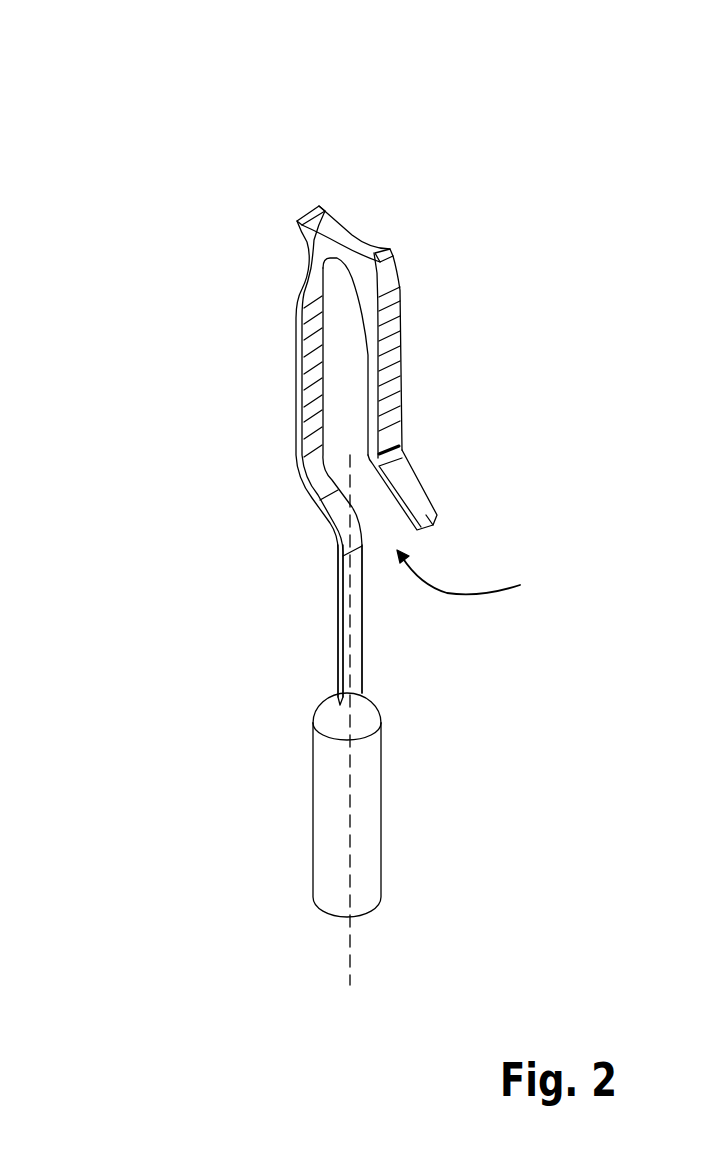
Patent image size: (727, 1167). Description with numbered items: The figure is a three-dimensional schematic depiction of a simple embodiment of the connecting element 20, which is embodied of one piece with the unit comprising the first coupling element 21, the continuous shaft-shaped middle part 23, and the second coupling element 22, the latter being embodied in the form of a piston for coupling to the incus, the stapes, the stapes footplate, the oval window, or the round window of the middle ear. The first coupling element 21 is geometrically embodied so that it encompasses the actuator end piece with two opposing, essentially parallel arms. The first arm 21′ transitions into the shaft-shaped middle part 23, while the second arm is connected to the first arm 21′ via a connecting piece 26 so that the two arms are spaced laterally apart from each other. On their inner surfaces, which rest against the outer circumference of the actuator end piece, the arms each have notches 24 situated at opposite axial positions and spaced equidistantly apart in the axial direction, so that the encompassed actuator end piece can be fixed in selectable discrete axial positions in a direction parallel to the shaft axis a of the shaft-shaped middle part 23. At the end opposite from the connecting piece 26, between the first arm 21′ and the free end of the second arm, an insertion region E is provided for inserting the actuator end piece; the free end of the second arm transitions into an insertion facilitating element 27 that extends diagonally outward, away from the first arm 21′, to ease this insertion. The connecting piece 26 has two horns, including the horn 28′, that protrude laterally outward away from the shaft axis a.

The connecting element 20 is at (180, 158).
The first coupling element 21 is at (297, 312).
The first arm 21′ is at (297, 464).
The second coupling element 22 is at (325, 815).
The shaft-shaped middle part 23 is at (337, 630).
The notches 24 is at (312, 398).
The connecting piece 26 is at (341, 237).
The insertion facilitating element 27 is at (415, 497).
The horn 28′ is at (312, 200).
The insertion region E is at (478, 580).
The shaft axis a is at (352, 950).